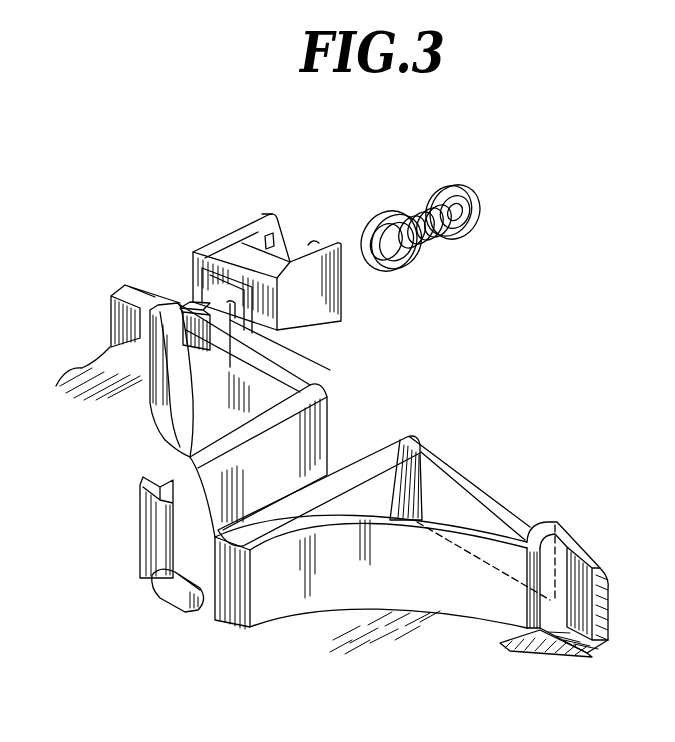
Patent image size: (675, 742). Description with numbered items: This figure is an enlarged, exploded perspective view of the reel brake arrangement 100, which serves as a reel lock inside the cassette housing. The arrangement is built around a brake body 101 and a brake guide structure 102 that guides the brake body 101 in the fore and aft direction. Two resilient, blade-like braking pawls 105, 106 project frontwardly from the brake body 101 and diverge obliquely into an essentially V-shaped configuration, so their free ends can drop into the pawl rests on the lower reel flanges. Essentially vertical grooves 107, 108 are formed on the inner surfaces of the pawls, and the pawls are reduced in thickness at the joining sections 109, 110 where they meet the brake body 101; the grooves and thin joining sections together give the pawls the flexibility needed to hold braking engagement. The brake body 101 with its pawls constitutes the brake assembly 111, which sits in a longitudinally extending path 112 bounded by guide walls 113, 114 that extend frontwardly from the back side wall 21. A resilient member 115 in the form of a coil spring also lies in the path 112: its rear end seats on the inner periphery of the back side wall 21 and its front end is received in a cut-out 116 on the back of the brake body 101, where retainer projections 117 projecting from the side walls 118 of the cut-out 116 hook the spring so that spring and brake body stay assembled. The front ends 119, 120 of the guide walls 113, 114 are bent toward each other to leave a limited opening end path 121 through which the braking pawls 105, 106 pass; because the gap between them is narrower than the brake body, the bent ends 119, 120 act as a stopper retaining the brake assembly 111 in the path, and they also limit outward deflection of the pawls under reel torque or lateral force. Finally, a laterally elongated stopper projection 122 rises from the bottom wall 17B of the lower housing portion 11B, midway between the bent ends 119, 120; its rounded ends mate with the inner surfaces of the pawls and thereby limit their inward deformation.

The reel brake arrangement 100 is at (425, 377).
The brake body 101 is at (221, 244).
The brake guide structure 102 is at (322, 481).
The braking pawl 105 is at (178, 300).
The braking pawl 106 is at (290, 368).
The vertical groove 107 is at (200, 326).
The vertical groove 108 is at (281, 345).
The joining section 109 is at (200, 296).
The joining section 110 is at (238, 322).
The brake assembly 111 is at (242, 216).
The longitudinally extending path 112 is at (205, 495).
The guide wall 113 is at (242, 428).
The guide wall 114 is at (372, 473).
The resilient member 115 is at (428, 243).
The cut-out 116 is at (336, 250).
The retainer projection 117 is at (273, 243).
The side wall 118 is at (264, 214).
The bent front end 119 is at (165, 540).
The bent front end 120 is at (220, 573).
The limited opening end path 121 is at (205, 560).
The stopper projection 122 is at (175, 584).
The back side wall 21 is at (484, 491).
The lower housing portion 11B is at (526, 503).
The bottom wall 17B is at (517, 628).